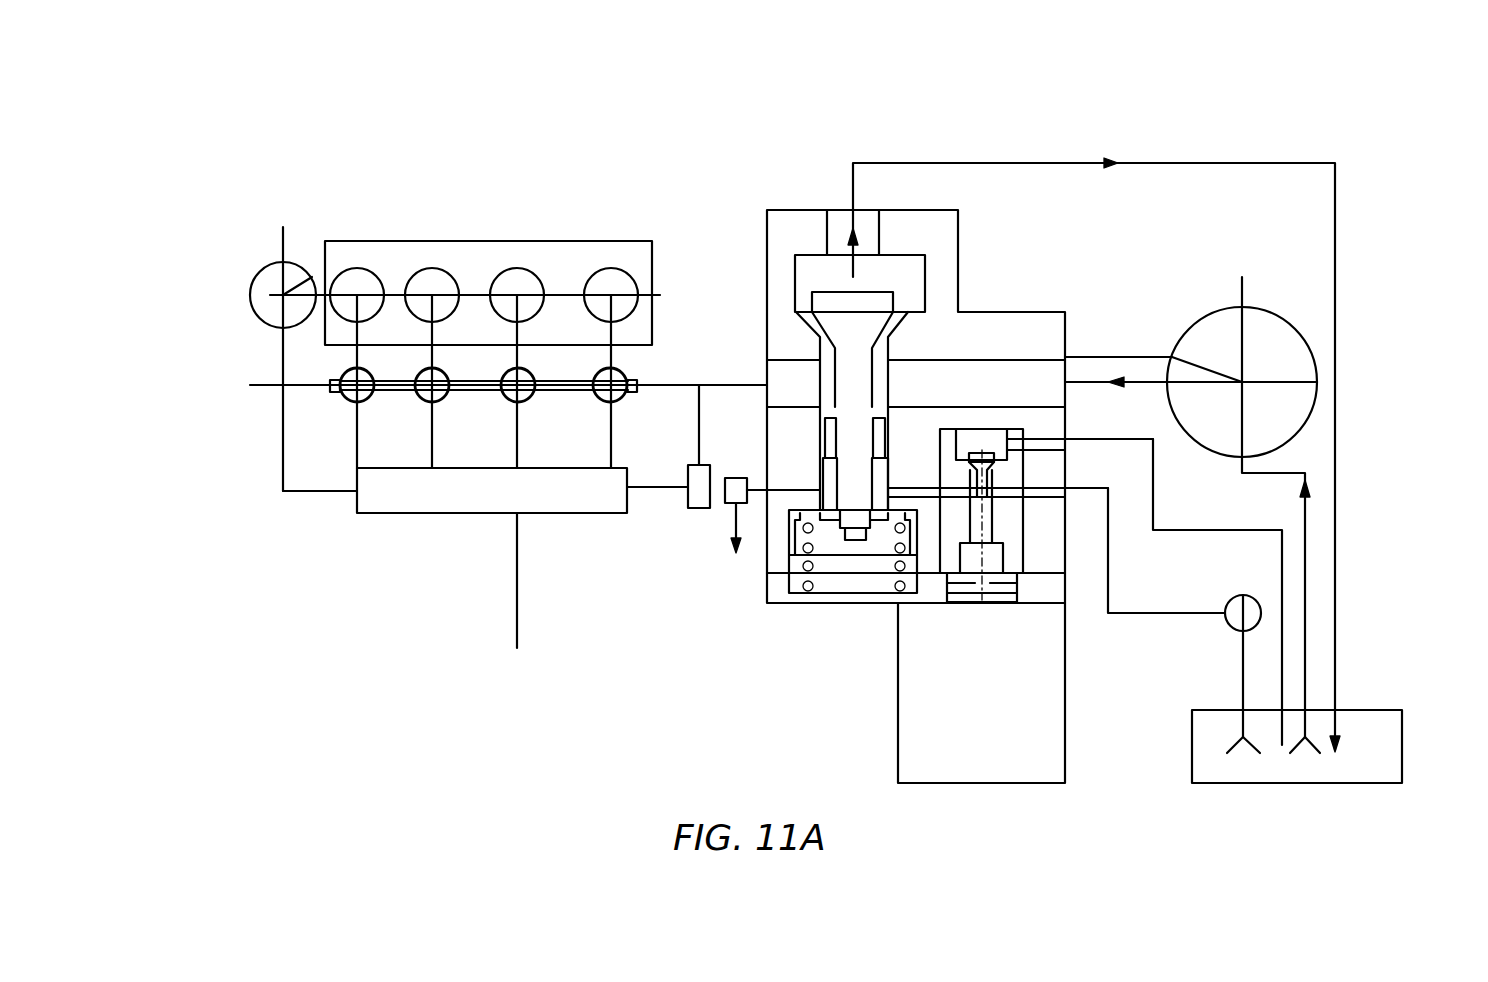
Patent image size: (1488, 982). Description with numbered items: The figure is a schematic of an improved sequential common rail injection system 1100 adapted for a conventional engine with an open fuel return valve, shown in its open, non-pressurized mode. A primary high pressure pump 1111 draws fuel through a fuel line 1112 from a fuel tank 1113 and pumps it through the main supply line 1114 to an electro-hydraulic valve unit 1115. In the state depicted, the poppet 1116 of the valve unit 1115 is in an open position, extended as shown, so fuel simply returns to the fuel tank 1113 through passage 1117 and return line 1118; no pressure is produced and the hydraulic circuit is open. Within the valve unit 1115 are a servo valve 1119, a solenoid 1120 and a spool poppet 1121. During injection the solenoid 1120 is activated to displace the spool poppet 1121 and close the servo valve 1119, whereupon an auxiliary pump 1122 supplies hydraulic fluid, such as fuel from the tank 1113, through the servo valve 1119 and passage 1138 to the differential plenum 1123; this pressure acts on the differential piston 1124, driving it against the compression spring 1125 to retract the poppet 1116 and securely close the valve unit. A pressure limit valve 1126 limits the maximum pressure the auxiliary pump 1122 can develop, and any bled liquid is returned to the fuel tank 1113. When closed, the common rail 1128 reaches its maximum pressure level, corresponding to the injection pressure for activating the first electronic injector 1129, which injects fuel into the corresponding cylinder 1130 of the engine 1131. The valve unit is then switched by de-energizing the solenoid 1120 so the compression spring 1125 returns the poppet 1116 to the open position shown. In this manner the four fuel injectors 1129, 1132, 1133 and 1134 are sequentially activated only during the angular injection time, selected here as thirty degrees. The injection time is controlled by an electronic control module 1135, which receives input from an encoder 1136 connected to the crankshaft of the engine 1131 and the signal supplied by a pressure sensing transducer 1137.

The sequential common rail system 1100 is at (662, 172).
The primary high pressure pump 1111 is at (1250, 515).
The fuel line 1112 is at (1300, 592).
The fuel tank 1113 is at (1331, 725).
The main supply line 1114 is at (1118, 333).
The electro-hydraulic valve unit 1115 is at (951, 406).
The poppet 1116 is at (930, 361).
The passage 1117 is at (836, 227).
The return line 1118 is at (1094, 434).
The servo valve 1119 is at (1072, 573).
The solenoid 1120 is at (1031, 693).
The spool poppet 1121 is at (1069, 514).
The auxiliary pump 1122 is at (1184, 620).
The differential plenum 1123 is at (905, 419).
The differential piston 1124 is at (801, 619).
The compression spring 1125 is at (795, 600).
The pressure limit valve 1126 is at (694, 562).
The common rail 1128 is at (508, 420).
The first electronic injector 1129 is at (668, 371).
The cylinder 1130 is at (484, 334).
The engine 1131 is at (488, 266).
The fuel injector 1132 is at (359, 433).
The fuel injector 1133 is at (322, 408).
The fuel injector 1134 is at (281, 365).
The electronic control module 1135 is at (514, 558).
The encoder 1136 is at (405, 359).
The pressure sensing transducer 1137 is at (646, 495).
The passage 1138 is at (998, 437).